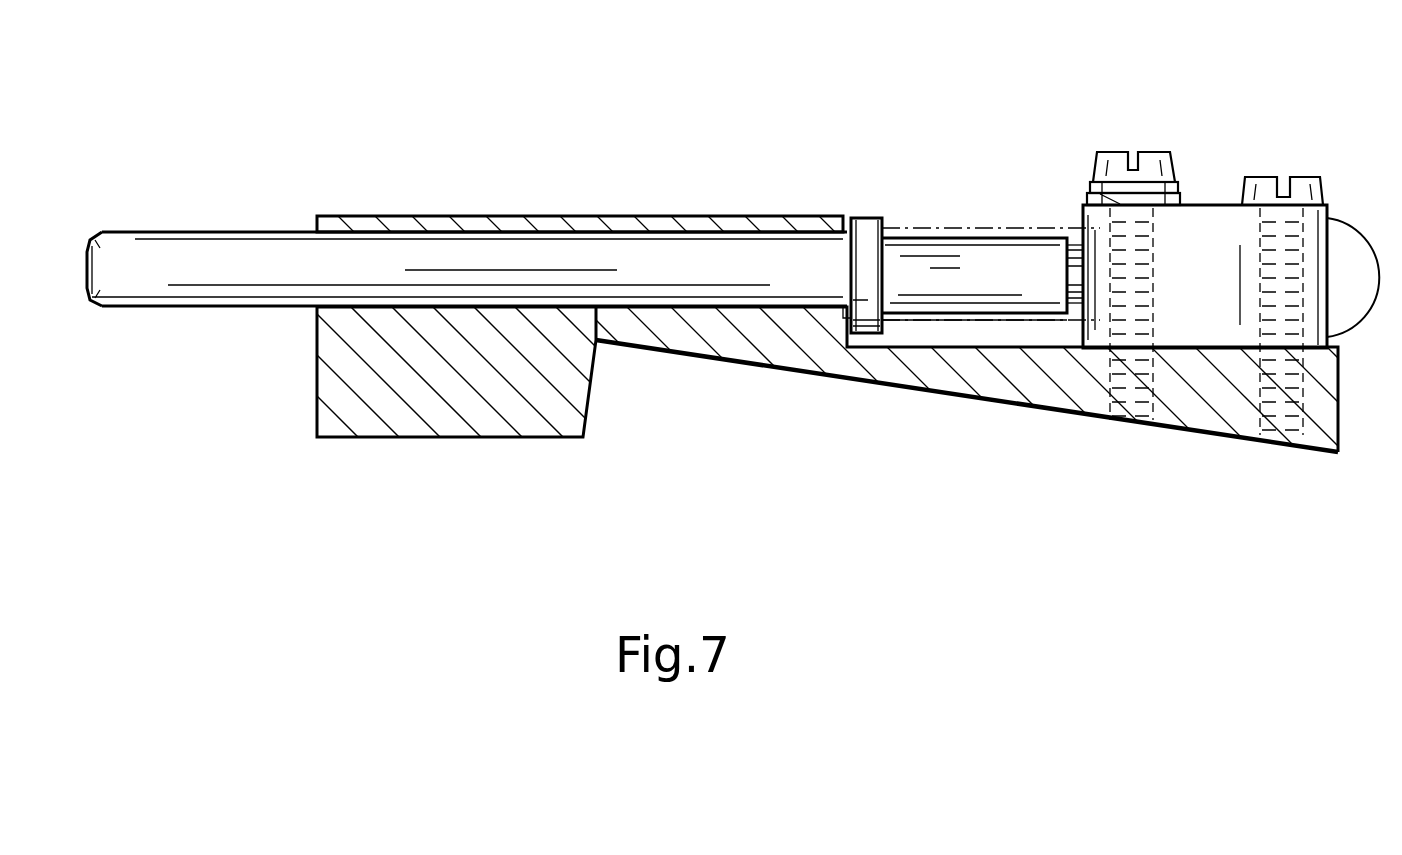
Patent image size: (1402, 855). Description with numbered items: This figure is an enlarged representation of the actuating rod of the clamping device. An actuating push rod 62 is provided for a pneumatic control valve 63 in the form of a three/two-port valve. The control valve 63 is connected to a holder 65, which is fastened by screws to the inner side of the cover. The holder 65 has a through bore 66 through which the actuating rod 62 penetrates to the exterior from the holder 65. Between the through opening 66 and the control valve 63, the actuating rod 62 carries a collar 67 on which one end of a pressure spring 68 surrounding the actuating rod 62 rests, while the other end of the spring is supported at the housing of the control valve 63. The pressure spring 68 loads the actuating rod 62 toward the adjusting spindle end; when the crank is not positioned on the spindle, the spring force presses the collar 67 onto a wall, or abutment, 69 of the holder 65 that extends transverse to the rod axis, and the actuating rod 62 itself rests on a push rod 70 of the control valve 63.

The actuating push rod 62 is at (942, 262).
The pneumatic control valve 63 is at (1195, 245).
The holder 65 is at (1188, 380).
The through bore 66 is at (460, 231).
The collar 67 is at (861, 243).
The pressure spring 68 is at (926, 322).
The wall (abutment) 69 is at (841, 318).
The push rod 70 is at (1075, 258).